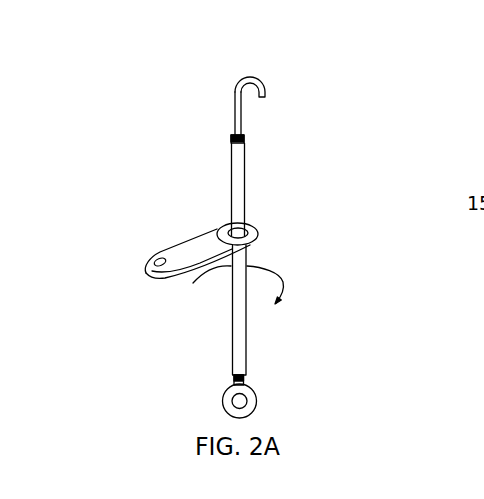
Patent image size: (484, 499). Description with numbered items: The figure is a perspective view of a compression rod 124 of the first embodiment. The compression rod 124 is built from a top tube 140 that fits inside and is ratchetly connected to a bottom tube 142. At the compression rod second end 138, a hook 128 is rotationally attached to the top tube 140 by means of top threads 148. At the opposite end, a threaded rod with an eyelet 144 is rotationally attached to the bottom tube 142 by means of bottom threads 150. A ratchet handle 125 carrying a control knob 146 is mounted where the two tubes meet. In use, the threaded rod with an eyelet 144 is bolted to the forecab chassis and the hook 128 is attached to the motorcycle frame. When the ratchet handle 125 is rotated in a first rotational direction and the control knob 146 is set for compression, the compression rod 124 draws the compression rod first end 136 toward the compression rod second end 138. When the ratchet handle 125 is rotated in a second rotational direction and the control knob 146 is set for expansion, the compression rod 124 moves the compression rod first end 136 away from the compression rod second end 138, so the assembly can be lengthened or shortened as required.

The compression rod 124 is at (156, 37).
The ratchet handle 125 is at (147, 263).
The hook 128 is at (267, 83).
The compression rod first end 136 is at (195, 370).
The compression rod second end 138 is at (197, 95).
The top tube 140 is at (246, 188).
The bottom tube 142 is at (250, 326).
The threaded rod with an eyelet 144 is at (256, 397).
The control knob 146 is at (203, 238).
The top threads 148 is at (245, 138).
The bottom threads 150 is at (250, 378).